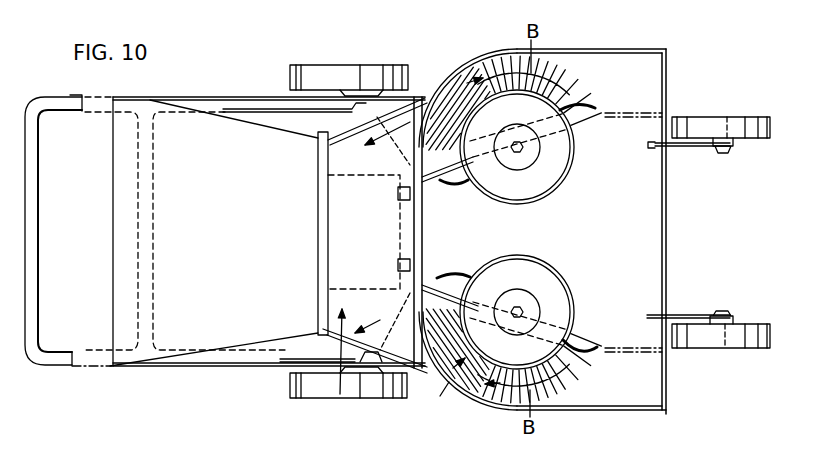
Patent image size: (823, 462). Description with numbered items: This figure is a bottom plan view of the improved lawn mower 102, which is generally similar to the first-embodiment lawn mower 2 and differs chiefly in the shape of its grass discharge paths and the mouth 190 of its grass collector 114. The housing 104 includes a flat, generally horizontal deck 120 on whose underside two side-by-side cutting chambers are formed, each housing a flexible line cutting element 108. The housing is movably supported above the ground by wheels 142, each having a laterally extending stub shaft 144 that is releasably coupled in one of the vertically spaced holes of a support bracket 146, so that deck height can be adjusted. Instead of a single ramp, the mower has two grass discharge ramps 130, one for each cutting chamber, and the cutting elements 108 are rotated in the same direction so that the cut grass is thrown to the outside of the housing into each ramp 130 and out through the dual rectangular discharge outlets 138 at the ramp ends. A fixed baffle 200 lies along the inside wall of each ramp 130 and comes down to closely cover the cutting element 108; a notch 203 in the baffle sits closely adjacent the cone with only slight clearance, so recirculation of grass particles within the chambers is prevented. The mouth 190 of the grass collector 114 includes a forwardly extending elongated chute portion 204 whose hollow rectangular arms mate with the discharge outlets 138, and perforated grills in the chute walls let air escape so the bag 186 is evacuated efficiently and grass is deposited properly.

The lawn mower 2 is at (683, 70).
The lawn mower 102 is at (512, 45).
The housing 104 is at (623, 78).
The cutting elements 108 is at (555, 186).
The grass collector 114 is at (208, 321).
The deck 120 is at (638, 386).
The grass discharge ramps 130 is at (446, 400).
The discharge outlets 138 is at (404, 174).
The wheels 142 is at (402, 63).
The stub shaft 144 is at (723, 152).
The support brackets 146 is at (700, 147).
The bag 186 is at (138, 364).
The mouth 190 is at (320, 316).
The fixed baffle 200 is at (430, 282).
The notch 203 is at (504, 292).
The chute portion 204 is at (332, 368).